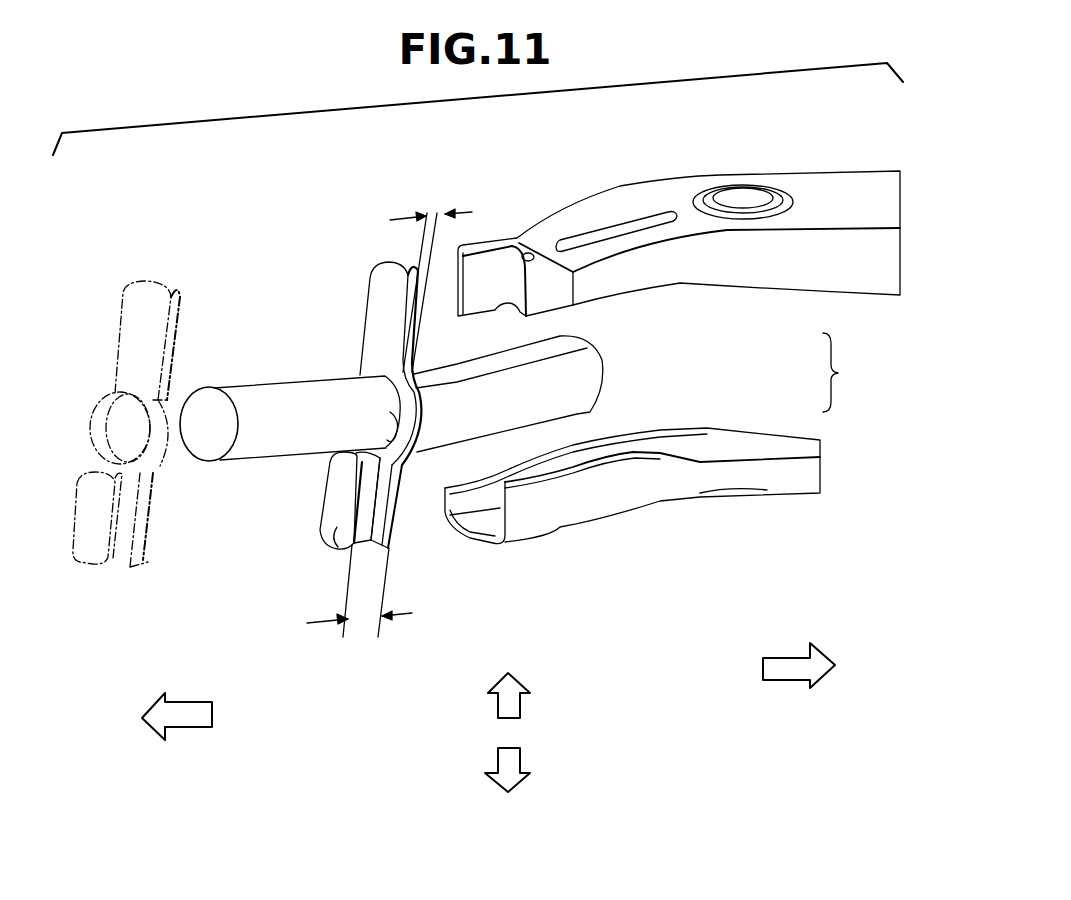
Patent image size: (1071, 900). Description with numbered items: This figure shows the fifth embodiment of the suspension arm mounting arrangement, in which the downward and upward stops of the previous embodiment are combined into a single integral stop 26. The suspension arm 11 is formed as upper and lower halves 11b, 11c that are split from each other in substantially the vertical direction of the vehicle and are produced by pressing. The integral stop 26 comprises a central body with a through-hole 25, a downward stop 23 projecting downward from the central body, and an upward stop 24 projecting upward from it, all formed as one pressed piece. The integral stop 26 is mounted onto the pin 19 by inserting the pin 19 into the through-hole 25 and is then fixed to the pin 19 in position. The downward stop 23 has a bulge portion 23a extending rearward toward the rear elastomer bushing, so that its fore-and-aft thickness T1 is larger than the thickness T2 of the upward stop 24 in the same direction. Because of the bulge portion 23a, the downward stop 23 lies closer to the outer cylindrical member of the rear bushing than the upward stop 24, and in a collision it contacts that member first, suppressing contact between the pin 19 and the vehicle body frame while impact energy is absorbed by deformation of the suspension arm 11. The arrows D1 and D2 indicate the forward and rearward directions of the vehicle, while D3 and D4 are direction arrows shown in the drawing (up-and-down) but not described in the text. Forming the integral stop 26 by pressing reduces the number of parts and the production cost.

The suspension arm 11 is at (847, 372).
The upper half 11b is at (748, 276).
The lower half 11c is at (748, 430).
The pin 19 is at (283, 395).
The downward stop 23 is at (374, 550).
The bulge portion 23a is at (331, 550).
The upward stop 24 is at (380, 293).
The through-hole 25 is at (404, 440).
The integral stop 26 is at (361, 358).
The thickness of downward stop T1 is at (359, 603).
The thickness of upward stop T2 is at (431, 276).
The forward direction D1 is at (790, 672).
The rearward direction D2 is at (195, 720).
The direction D3 is at (521, 708).
The direction D4 is at (521, 758).